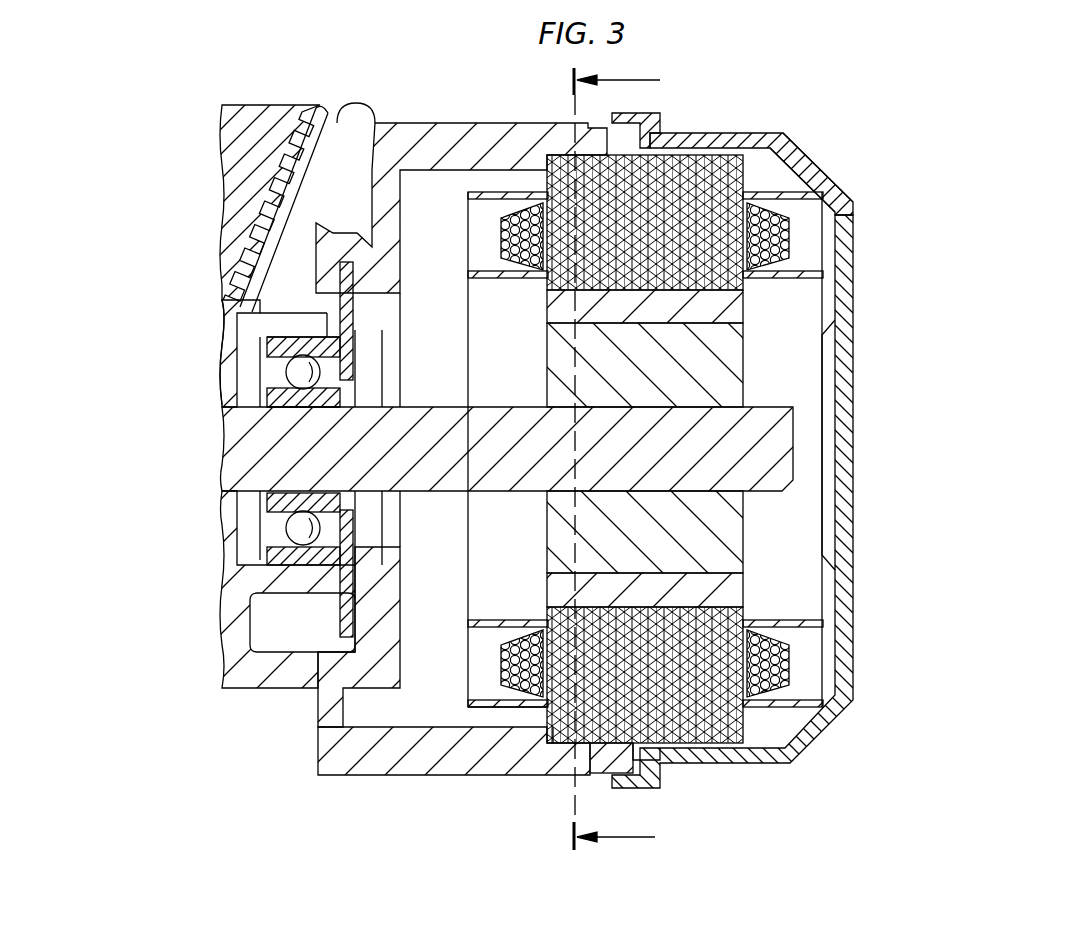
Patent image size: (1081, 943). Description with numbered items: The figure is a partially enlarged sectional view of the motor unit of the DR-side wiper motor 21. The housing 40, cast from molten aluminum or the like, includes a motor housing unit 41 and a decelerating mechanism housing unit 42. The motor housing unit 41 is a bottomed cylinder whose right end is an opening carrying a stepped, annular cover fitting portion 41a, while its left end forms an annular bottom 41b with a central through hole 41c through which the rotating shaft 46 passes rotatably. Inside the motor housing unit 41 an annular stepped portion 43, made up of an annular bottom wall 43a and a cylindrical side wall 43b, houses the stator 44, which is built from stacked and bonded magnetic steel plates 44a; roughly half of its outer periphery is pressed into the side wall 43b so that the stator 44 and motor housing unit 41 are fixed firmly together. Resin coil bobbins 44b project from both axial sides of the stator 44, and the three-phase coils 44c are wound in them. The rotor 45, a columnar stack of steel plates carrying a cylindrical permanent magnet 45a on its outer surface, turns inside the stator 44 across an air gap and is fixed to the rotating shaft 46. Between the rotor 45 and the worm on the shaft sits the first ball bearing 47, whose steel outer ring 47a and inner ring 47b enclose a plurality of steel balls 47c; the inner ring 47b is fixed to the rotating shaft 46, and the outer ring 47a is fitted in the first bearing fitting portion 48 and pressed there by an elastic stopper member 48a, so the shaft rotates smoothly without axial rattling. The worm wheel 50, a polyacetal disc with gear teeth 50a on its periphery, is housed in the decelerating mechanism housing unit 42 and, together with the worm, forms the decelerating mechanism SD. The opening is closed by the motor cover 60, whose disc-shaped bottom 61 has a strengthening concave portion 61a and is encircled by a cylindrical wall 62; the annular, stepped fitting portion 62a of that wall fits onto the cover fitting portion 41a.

The DR-side wiper motor 21 is at (914, 322).
The housing 40 is at (225, 690).
The motor housing unit 41 is at (515, 147).
The cover fitting portion 41a is at (660, 780).
The annular bottom 41b is at (367, 627).
The through hole 41c is at (403, 350).
The decelerating mechanism housing unit 42 is at (227, 600).
The stepped portion 43 is at (700, 760).
The bottom wall 43a is at (553, 733).
The side wall 43b is at (640, 752).
The stator 44 is at (742, 137).
The steel plates 44a is at (740, 717).
The coil bobbins 44b is at (463, 193).
The coils 44c is at (503, 680).
The rotor 45 is at (655, 382).
The permanent magnet 45a is at (705, 588).
The rotating shaft 46 is at (685, 442).
The first ball bearing 47 is at (255, 366).
The outer ring 47a is at (300, 343).
The inner ring 47b is at (293, 400).
The steel balls 47c is at (300, 527).
The first bearing fitting portion 48 is at (330, 580).
The stopper member 48a is at (345, 620).
The worm wheel 50 is at (243, 168).
The gear teeth 50a is at (302, 113).
The motor cover 60 is at (832, 153).
The bottom 61 is at (845, 643).
The concave portion 61a is at (828, 498).
The cylindrical wall 62 is at (770, 133).
The fitting portion 62a is at (733, 140).
The decelerating mechanism SD is at (216, 220).